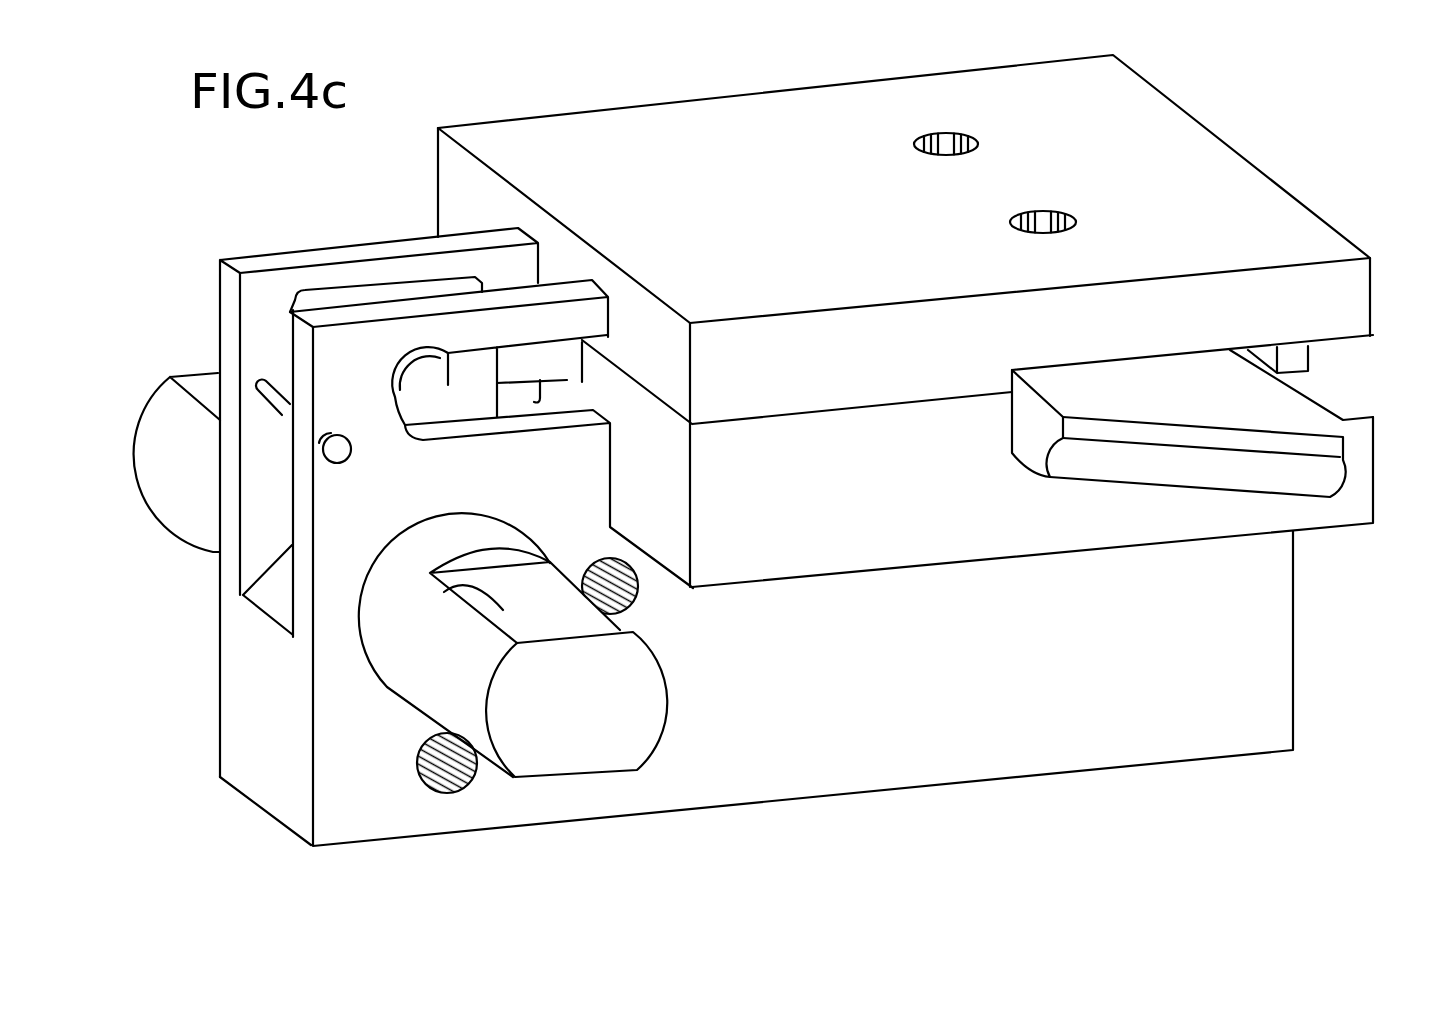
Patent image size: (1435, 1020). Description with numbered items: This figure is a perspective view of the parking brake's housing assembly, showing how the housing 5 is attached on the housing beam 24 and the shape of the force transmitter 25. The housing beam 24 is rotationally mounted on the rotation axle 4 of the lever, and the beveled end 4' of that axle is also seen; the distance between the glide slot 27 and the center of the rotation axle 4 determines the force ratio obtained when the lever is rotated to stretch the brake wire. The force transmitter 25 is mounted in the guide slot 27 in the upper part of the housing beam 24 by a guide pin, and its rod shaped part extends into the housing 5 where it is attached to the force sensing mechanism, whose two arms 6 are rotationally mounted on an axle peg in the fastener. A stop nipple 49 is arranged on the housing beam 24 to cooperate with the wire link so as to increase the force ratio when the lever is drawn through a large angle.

The rotation axle 4 is at (513, 701).
The beveled end of the rotation axle 4' is at (283, 536).
The housing 5 is at (1213, 165).
The arms 6 is at (1283, 404).
The housing beam 24 is at (1129, 782).
The force transmitter 25 is at (367, 290).
The guide slot 27 is at (567, 386).
The stop nipple 49 is at (283, 388).